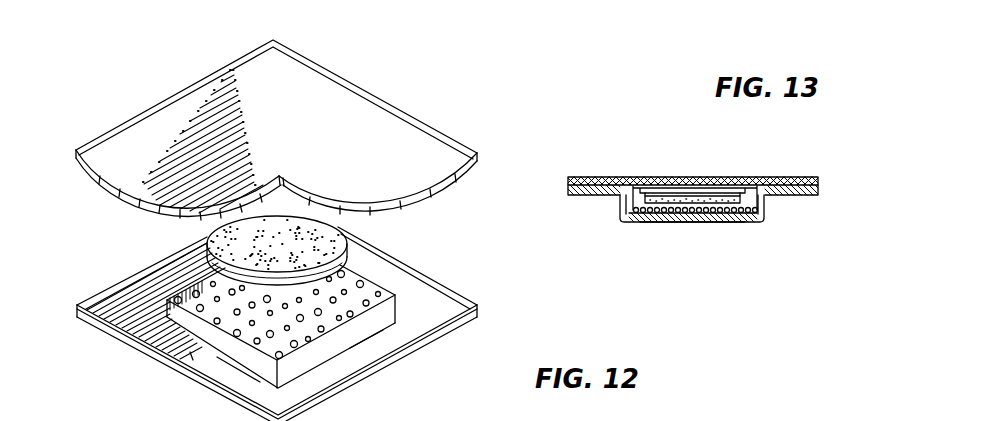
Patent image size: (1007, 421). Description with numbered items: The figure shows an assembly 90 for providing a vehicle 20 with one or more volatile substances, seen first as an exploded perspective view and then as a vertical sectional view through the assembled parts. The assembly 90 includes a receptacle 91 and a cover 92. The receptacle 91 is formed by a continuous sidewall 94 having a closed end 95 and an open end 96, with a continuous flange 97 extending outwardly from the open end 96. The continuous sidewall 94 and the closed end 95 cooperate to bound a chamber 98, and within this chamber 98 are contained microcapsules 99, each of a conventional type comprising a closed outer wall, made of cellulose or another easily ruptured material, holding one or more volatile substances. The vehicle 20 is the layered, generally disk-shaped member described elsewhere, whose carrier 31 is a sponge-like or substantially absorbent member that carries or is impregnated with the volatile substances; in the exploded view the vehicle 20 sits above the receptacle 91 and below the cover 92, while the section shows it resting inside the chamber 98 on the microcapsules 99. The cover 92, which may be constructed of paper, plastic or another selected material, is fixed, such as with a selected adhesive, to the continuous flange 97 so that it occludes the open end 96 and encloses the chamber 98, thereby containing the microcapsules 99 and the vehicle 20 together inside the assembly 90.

In FIG. 12, the vehicle 20 is at (358, 242).
In FIG. 13, the vehicle 20 is at (741, 194).
In FIG. 13, the carrier 31 is at (653, 222).
In FIG. 12, the assembly 90 is at (501, 141).
In FIG. 13, the assembly 90 is at (673, 246).
In FIG. 12, the receptacle 91 is at (442, 297).
In FIG. 13, the receptacle 91 is at (770, 221).
In FIG. 12, the cover 92 is at (340, 97).
In FIG. 13, the cover 92 is at (800, 174).
In FIG. 13, the continuous sidewall 94 is at (621, 206).
In FIG. 13, the closed end 95 is at (743, 222).
In FIG. 13, the open end 96 is at (632, 187).
In FIG. 12, the continuous flange 97 is at (394, 334).
In FIG. 13, the continuous flange 97 is at (580, 197).
In FIG. 12, the chamber 98 is at (291, 312).
In FIG. 12, the microcapsules 99 is at (268, 296).
In FIG. 13, the microcapsules 99 is at (720, 220).